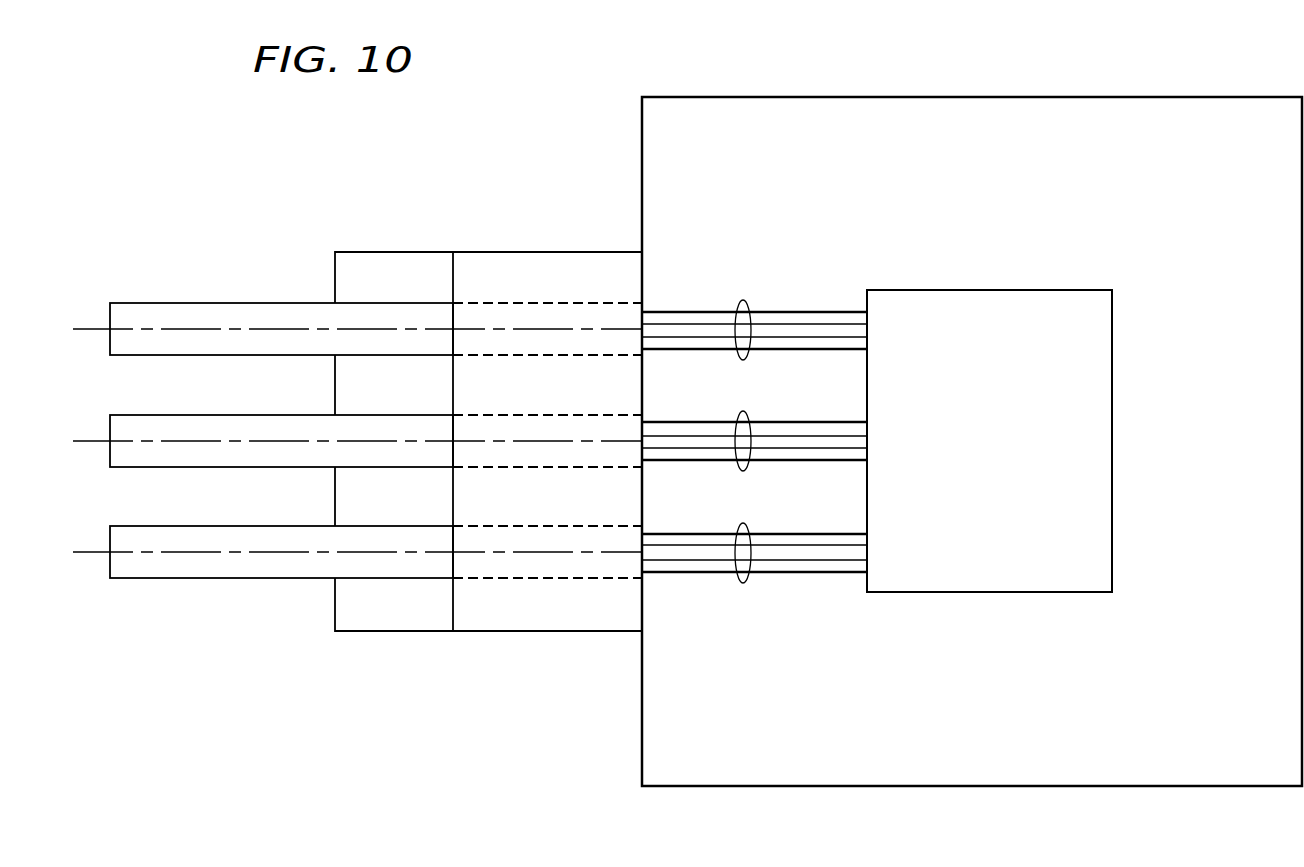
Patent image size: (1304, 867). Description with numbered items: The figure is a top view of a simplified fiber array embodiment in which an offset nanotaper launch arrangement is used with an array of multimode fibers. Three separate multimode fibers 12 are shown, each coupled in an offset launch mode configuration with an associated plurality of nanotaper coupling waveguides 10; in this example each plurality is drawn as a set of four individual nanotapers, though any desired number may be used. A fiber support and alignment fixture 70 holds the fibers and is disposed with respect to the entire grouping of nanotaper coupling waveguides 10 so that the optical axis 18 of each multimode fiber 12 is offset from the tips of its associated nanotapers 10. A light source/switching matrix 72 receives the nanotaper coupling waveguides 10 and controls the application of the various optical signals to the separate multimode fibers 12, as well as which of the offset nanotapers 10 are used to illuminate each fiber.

The nanotaper coupling waveguides 10 is at (743, 300).
The multimode fibers 12 is at (110, 320).
The optical axes 18 is at (180, 329).
The fiber support and alignment fixture 70 is at (551, 250).
The light source/switching matrix 72 is at (1022, 290).